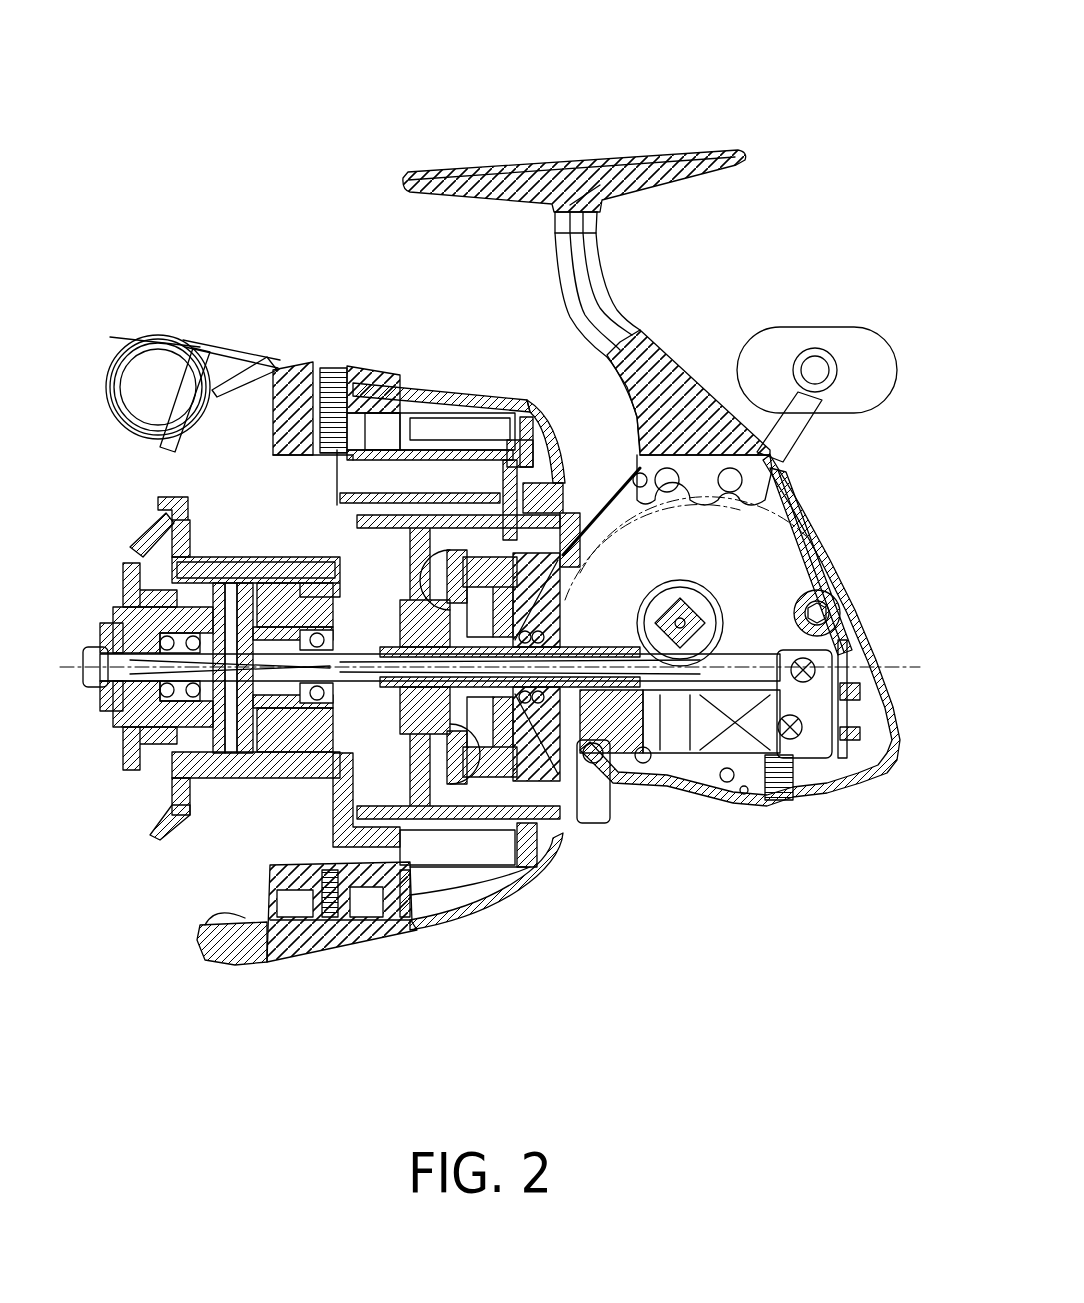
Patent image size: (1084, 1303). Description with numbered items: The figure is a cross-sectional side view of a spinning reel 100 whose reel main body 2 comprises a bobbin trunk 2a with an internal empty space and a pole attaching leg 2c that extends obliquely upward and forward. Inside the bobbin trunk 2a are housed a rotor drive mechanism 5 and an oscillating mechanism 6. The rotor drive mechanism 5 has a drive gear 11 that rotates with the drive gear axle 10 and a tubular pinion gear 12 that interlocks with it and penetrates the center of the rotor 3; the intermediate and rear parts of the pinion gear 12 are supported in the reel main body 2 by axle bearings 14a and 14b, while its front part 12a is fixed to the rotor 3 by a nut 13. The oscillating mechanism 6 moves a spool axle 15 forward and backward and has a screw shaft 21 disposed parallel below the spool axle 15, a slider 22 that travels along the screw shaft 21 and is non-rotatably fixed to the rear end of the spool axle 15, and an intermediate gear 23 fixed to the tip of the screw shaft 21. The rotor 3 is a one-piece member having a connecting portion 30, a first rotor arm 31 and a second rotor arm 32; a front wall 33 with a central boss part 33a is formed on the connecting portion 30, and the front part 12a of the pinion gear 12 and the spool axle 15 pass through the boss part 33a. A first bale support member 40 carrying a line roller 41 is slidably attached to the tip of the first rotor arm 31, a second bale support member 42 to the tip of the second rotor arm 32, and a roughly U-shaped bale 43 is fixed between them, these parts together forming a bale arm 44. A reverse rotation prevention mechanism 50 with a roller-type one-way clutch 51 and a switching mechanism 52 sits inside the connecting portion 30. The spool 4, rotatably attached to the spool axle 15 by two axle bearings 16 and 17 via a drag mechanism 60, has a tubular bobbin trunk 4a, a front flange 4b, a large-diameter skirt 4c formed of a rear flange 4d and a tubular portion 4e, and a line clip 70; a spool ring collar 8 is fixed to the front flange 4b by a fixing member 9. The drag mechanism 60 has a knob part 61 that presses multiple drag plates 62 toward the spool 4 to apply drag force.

The spinning reel 100 is at (575, 128).
The reel main body 2 is at (887, 800).
The bobbin trunk 2a is at (842, 620).
The pole attaching leg 2c is at (610, 268).
The rotor 3 is at (400, 957).
The spool 4 is at (233, 520).
The bobbin trunk 4a is at (265, 560).
The front flange 4b is at (193, 520).
The skirt 4c is at (423, 477).
The rear flange 4d is at (323, 453).
The tubular portion 4e is at (455, 455).
The rotor drive mechanism 5 is at (748, 528).
The oscillating mechanism 6 is at (747, 797).
The spool ring collar 8 is at (170, 843).
The fixing member 9 is at (150, 535).
The drive gear axle 10 is at (813, 577).
The drive gear 11 is at (768, 503).
The pinion gear 12 is at (640, 460).
The front part of the pinion gear 12a is at (435, 595).
The nut 13 is at (397, 720).
The axle bearing 14a is at (530, 868).
The axle bearing 14b is at (660, 760).
The spool axle 15 is at (462, 680).
The axle bearing 16 is at (263, 747).
The axle bearing 17 is at (313, 740).
The screw shaft 21 is at (727, 782).
The slider 22 is at (817, 800).
The intermediate gear 23 is at (573, 823).
The connecting portion 30 is at (430, 835).
The first rotor arm 31 is at (407, 383).
The second rotor arm 32 is at (360, 953).
The front wall 33 is at (427, 577).
The boss part 33a is at (507, 517).
The first bale support member 40 is at (258, 358).
The line roller 41 is at (142, 352).
The second bale support member 42 is at (277, 967).
The bale 43 is at (177, 417).
The bale arm 44 is at (127, 437).
The reverse rotation prevention mechanism 50 is at (570, 493).
The one-way clutch 51 is at (593, 650).
The switching mechanism 52 is at (597, 803).
The drag mechanism 60 is at (228, 765).
The knob part 61 is at (93, 690).
The drag plates 62 is at (242, 747).
The line clip 70 is at (347, 393).